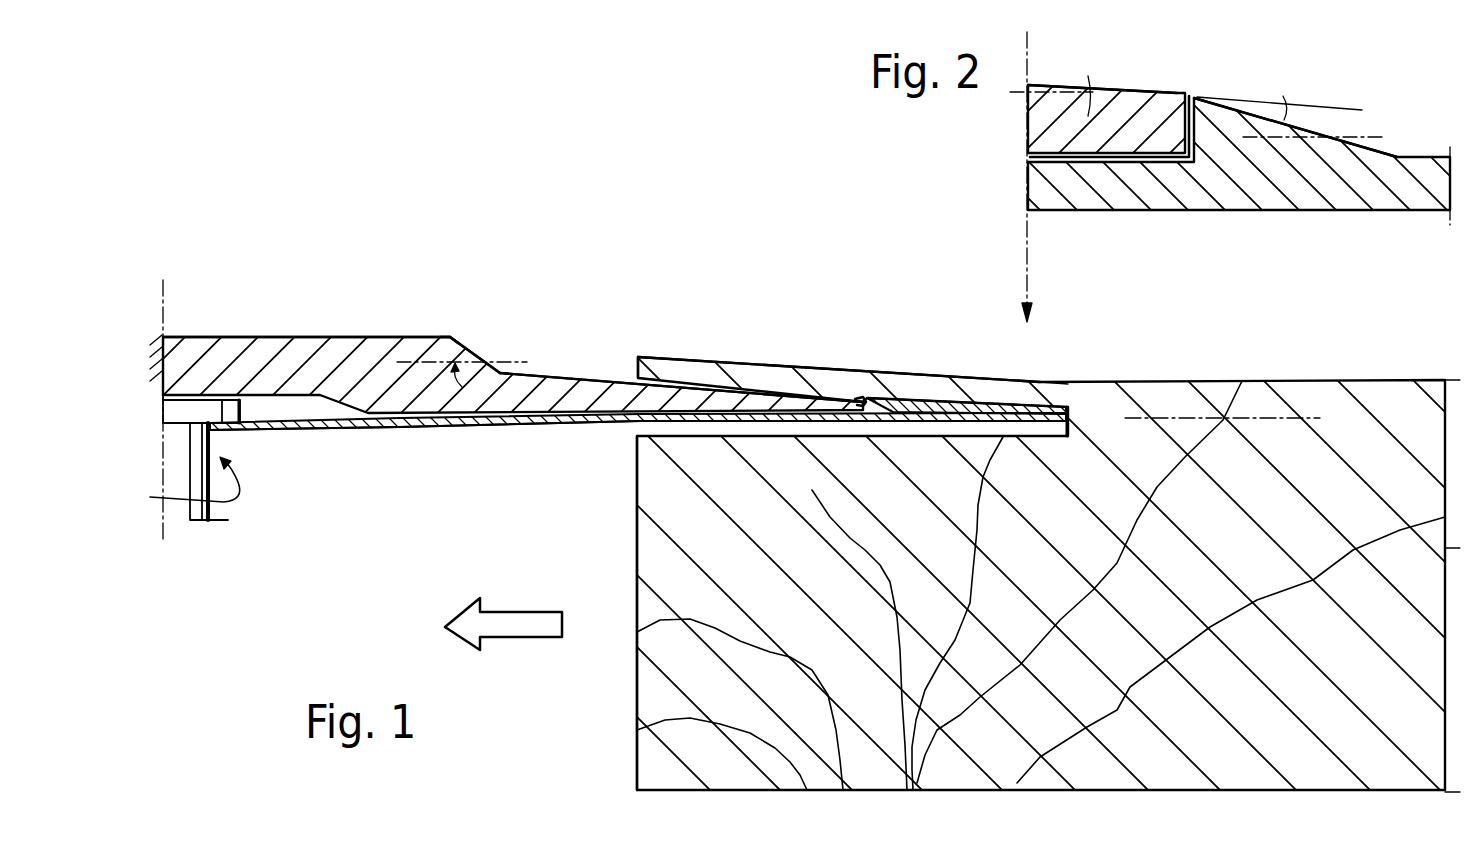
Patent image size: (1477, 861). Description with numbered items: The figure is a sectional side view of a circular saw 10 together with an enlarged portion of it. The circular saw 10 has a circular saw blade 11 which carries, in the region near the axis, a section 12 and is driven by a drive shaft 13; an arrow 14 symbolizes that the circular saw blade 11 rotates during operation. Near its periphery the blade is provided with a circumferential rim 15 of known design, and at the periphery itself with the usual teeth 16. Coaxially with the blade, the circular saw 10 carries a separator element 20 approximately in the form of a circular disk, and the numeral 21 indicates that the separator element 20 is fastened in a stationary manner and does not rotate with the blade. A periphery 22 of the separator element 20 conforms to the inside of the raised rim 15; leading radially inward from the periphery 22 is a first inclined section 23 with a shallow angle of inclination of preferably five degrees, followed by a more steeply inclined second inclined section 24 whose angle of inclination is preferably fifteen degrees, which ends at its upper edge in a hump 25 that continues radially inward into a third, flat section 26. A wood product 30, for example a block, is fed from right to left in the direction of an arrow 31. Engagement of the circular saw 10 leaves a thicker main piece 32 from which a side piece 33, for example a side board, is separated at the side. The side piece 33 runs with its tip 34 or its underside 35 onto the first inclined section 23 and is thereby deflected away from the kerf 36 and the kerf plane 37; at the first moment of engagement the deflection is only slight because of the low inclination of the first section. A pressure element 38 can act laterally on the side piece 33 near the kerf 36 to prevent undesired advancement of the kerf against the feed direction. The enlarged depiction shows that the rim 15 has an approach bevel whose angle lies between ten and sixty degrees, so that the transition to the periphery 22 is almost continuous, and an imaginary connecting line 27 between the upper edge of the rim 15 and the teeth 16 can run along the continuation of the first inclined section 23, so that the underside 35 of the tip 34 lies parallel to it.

In FIG. 1, the circular saw 10 is at (462, 229).
In FIG. 1, the circular saw blade 11 is at (553, 426).
In FIG. 2, the circular saw blade 11 is at (1270, 212).
In FIG. 1, the section 12 is at (385, 428).
In FIG. 1, the drive shaft 13 is at (182, 512).
In FIG. 1, the arrow 14 is at (211, 484).
In FIG. 1, the circumferential rim 15 is at (881, 404).
In FIG. 2, the circumferential rim 15 is at (1282, 108).
In FIG. 1, the teeth 16 is at (1070, 412).
In FIG. 1, the separator element 20 is at (390, 338).
In FIG. 2, the separator element 20 is at (1027, 122).
In FIG. 1, the stationary fastening 21 is at (155, 345).
In FIG. 1, the periphery 22 is at (838, 396).
In FIG. 2, the periphery 22 is at (1045, 155).
In FIG. 1, the first inclined section 23 is at (610, 379).
In FIG. 2, the first inclined section 23 is at (1058, 82).
In FIG. 1, the second inclined section 24 is at (461, 341).
In FIG. 1, the hump 25 is at (450, 338).
In FIG. 1, the third flat section 26 is at (287, 335).
In FIG. 2, the connecting line 27 is at (1347, 110).
In FIG. 1, the wood product 30 is at (748, 790).
In FIG. 1, the arrow 31 is at (508, 628).
In FIG. 1, the main piece 32 is at (657, 703).
In FIG. 1, the side piece 33 is at (787, 362).
In FIG. 1, the tip 34 is at (693, 370).
In FIG. 1, the underside 35 is at (657, 390).
In FIG. 1, the kerf 36 is at (1073, 412).
In FIG. 1, the kerf plane 37 is at (1307, 418).
In FIG. 2, the pressure element 38 is at (1027, 293).